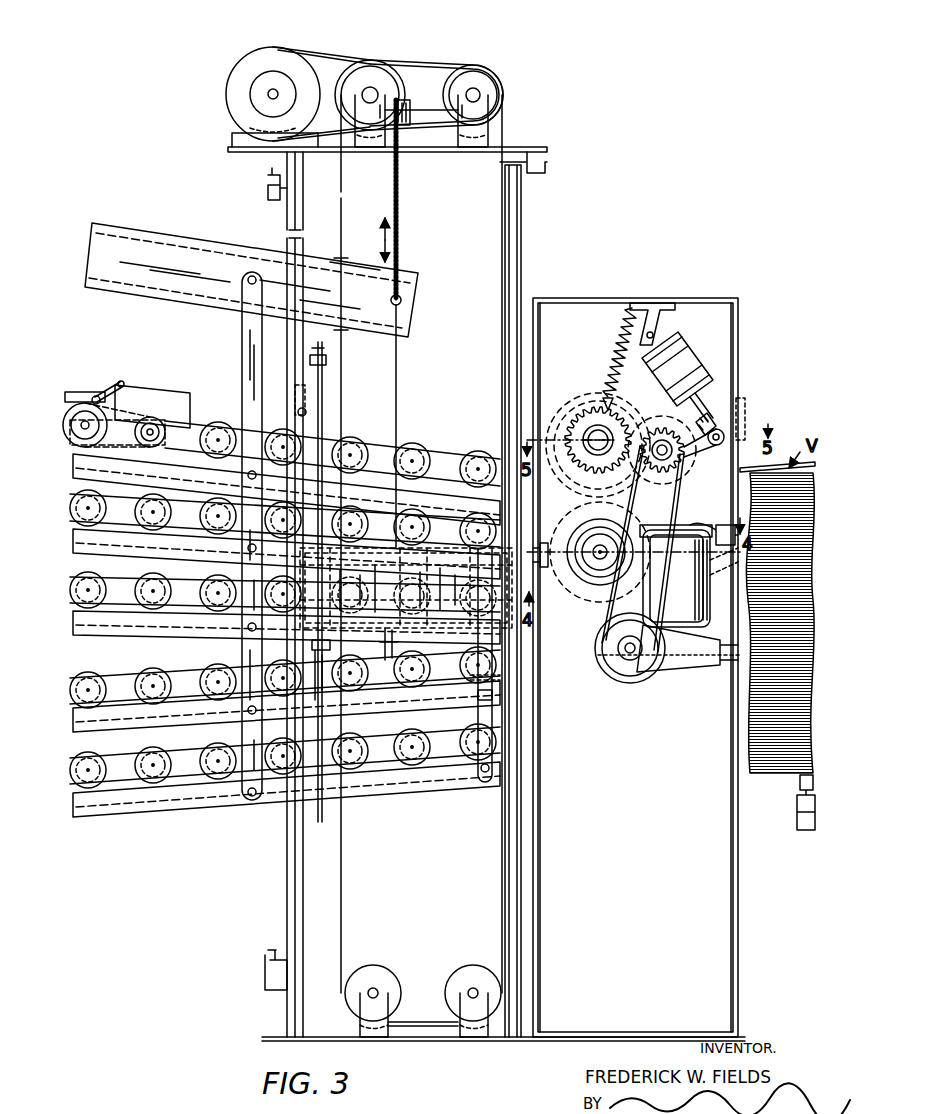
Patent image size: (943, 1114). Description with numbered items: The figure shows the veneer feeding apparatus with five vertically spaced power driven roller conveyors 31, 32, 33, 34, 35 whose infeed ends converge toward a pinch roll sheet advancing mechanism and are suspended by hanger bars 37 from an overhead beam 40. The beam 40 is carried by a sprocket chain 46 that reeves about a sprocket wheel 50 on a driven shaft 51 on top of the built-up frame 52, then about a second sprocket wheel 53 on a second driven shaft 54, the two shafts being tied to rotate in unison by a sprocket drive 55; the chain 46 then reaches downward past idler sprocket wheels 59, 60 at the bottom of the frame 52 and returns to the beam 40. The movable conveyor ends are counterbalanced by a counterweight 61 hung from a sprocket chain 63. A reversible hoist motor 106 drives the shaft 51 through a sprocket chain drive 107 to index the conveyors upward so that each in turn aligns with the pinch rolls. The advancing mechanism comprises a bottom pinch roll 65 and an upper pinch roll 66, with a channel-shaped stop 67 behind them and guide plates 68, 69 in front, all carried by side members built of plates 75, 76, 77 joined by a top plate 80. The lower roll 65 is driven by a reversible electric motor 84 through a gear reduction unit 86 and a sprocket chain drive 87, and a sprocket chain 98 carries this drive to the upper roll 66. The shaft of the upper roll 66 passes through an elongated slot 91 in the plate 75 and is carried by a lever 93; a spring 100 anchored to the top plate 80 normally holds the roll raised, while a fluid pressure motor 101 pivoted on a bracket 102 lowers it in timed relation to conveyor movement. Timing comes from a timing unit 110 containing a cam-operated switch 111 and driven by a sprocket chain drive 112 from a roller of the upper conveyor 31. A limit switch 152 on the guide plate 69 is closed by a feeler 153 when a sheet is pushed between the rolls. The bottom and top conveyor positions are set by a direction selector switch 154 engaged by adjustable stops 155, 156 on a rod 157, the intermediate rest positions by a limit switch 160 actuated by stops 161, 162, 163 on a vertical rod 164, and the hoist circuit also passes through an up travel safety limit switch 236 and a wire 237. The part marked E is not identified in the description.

The roller type conveyor 31 is at (200, 470).
The roller type conveyor 32 is at (190, 550).
The roller type conveyor 33 is at (190, 635).
The roller type conveyor 34 is at (190, 720).
The roller type conveyor 35 is at (178, 808).
The hanger bar 37 is at (242, 346).
The beam 40 is at (212, 228).
The sprocket chain 46 is at (341, 222).
The sprocket wheel 50 is at (393, 78).
The driven shaft 51 is at (372, 87).
The frame 52 is at (521, 210).
The sprocket wheel 53 is at (483, 82).
The driven shaft 54 is at (481, 95).
The sprocket drive 55 is at (445, 62).
The idler sprocket wheel 59 is at (477, 970).
The idler sprocket wheel 60 is at (377, 972).
The counterweight 61 is at (390, 636).
The sprocket chain 63 is at (398, 214).
The bottom pinch roll 65 is at (592, 606).
The upper pinch roll 66 is at (588, 406).
The stop 67 is at (569, 534).
The guide plate 68 is at (696, 526).
The guide plate 69 is at (746, 416).
The plate 75 is at (656, 866).
The plate 76 is at (731, 782).
The plate 77 is at (541, 783).
The top plate 80 is at (598, 298).
The reversible electric motor 84 is at (690, 608).
The gear reduction unit 86 is at (672, 645).
The sprocket chain drive 87 is at (598, 660).
The elongated slot 91 is at (573, 412).
The lever 93 is at (720, 447).
The sprocket chain 98 is at (656, 490).
The spring 100 is at (620, 340).
The fluid pressure operated motor 101 is at (688, 368).
The bracket 102 is at (666, 308).
The reversible electric motor 106 is at (243, 70).
The sprocket chain drive 107 is at (343, 62).
The timing unit 110 is at (82, 398).
The cam-operated switch 111 is at (140, 387).
The sprocket chain drive 112 is at (120, 460).
The limit switch 152 is at (656, 428).
The feeler 153 is at (666, 484).
The direction selector switch 154 is at (295, 388).
The adjustable stop 155 is at (322, 640).
The adjustable stop 156 is at (326, 362).
The rod 157 is at (318, 790).
The limit switch 160 is at (548, 567).
The adjustable stop 161 is at (478, 560).
The adjustable stop 162 is at (478, 628).
The adjustable stop 163 is at (480, 690).
The vertical rod 164 is at (478, 775).
The up travel safety limit switch 236 is at (268, 182).
The wire 237 is at (266, 985).
The ejector E is at (796, 870).